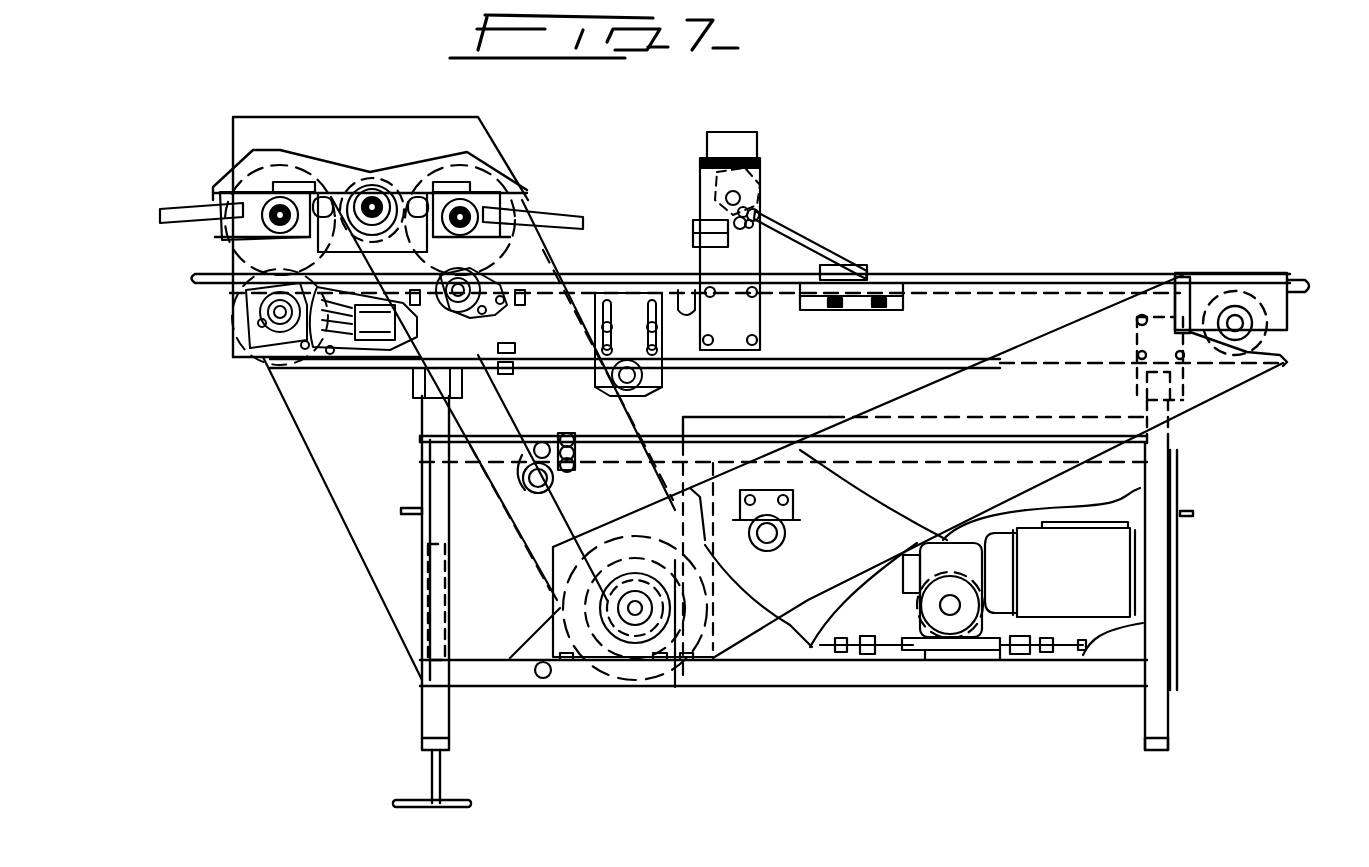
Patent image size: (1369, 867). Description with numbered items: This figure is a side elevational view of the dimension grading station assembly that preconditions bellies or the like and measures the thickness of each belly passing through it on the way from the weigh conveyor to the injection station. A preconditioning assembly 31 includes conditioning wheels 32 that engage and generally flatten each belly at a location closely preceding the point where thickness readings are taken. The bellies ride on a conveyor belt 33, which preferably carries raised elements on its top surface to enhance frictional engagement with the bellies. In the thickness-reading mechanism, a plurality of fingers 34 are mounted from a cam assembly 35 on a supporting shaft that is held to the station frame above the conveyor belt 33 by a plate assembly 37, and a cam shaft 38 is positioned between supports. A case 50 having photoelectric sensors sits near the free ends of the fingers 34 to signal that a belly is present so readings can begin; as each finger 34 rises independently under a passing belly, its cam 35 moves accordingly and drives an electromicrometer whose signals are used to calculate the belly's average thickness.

The preconditioning assembly 31 is at (503, 165).
The conditioning wheels 32 is at (250, 165).
The conveyor belt 33 is at (918, 273).
The fingers 34 is at (797, 230).
The cam assembly 35 is at (777, 177).
The plate assembly 37 is at (697, 187).
The cam shaft 38 is at (753, 213).
The case 50 is at (857, 263).